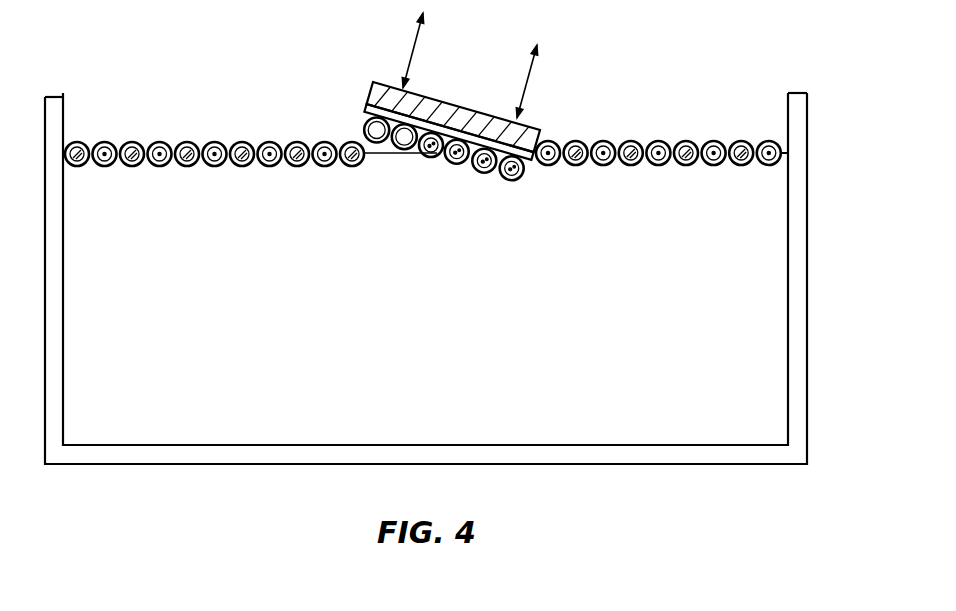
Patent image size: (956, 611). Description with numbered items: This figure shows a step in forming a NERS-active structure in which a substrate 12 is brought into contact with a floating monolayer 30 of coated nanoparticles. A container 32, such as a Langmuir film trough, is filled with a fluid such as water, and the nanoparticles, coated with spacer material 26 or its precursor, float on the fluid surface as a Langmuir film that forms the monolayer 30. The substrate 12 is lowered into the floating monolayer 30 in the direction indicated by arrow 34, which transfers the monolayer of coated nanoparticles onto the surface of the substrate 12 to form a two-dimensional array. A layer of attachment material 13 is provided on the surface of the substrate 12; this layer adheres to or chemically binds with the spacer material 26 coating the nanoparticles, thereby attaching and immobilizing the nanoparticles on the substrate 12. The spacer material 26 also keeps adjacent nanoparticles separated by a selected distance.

The substrate 12 is at (422, 100).
The layer of attachment material 13 is at (463, 137).
The spacer material 26 is at (239, 141).
The floating monolayer 30 is at (638, 118).
The container 32 is at (793, 179).
The arrow 34 is at (413, 50).